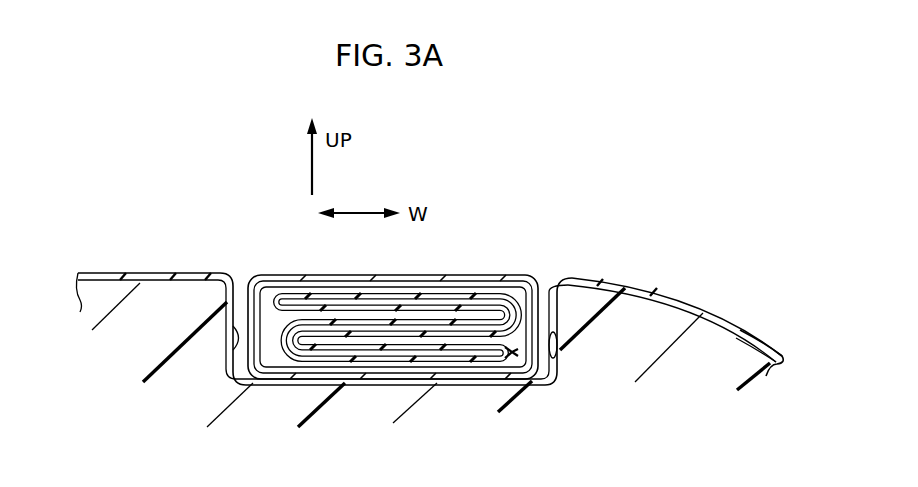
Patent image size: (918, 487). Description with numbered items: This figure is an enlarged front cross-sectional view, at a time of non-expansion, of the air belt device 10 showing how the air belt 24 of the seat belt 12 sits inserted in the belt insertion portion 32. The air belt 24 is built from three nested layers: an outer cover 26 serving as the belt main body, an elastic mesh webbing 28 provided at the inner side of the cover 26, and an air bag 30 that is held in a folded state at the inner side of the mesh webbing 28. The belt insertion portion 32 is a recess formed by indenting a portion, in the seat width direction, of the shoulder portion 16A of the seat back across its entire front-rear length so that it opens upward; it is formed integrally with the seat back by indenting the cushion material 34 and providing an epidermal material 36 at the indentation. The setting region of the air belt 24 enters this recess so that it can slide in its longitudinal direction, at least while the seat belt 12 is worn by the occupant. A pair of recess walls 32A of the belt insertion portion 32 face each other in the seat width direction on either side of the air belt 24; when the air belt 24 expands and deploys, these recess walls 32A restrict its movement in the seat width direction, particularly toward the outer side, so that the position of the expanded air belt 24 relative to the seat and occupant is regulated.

The air belt device 10 is at (666, 191).
The seat belt 12 is at (410, 308).
The shoulder portion 16A is at (177, 273).
The air belt 24 is at (476, 262).
The cover 26 is at (284, 380).
The mesh webbing 28 is at (372, 355).
The air bag 30 is at (408, 345).
The belt insertion portion 32 is at (552, 280).
The recess walls 32A is at (231, 356).
The cushion material 34 is at (674, 318).
The epidermal material 36 is at (727, 318).